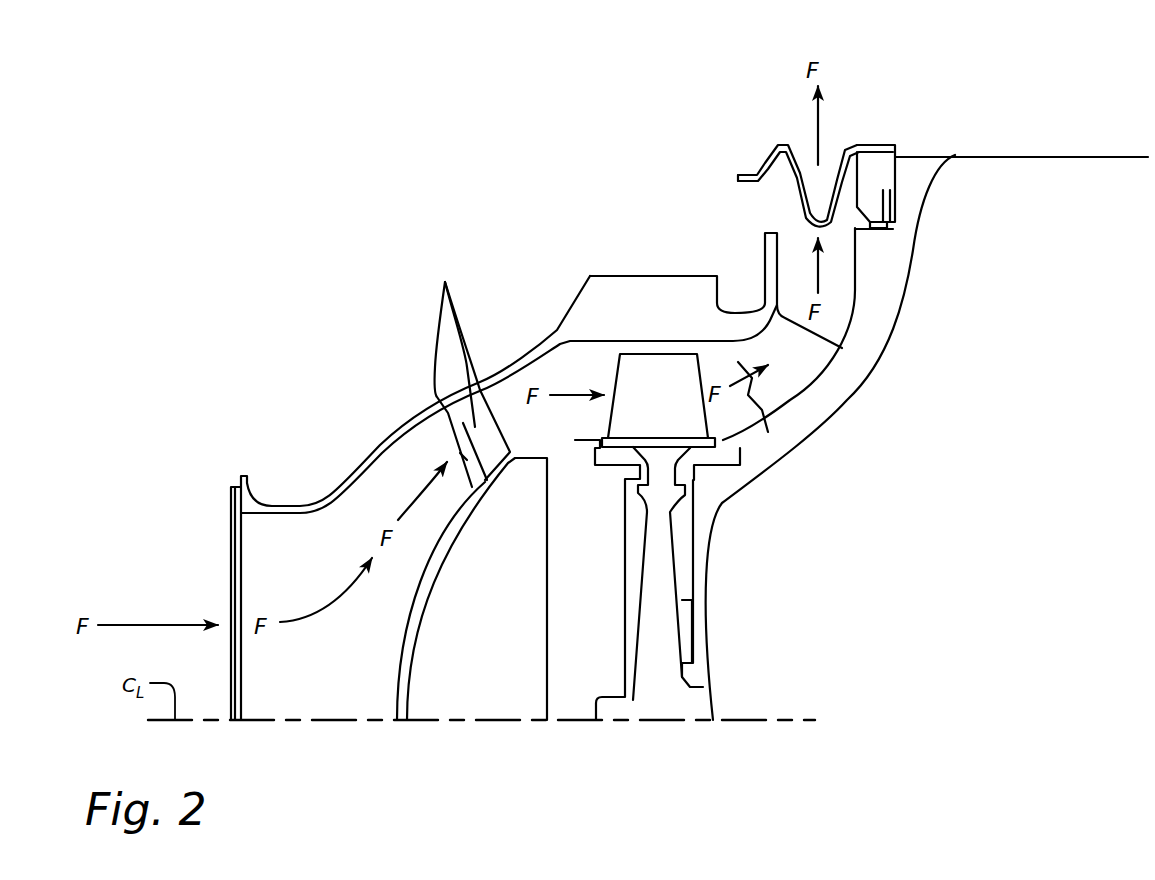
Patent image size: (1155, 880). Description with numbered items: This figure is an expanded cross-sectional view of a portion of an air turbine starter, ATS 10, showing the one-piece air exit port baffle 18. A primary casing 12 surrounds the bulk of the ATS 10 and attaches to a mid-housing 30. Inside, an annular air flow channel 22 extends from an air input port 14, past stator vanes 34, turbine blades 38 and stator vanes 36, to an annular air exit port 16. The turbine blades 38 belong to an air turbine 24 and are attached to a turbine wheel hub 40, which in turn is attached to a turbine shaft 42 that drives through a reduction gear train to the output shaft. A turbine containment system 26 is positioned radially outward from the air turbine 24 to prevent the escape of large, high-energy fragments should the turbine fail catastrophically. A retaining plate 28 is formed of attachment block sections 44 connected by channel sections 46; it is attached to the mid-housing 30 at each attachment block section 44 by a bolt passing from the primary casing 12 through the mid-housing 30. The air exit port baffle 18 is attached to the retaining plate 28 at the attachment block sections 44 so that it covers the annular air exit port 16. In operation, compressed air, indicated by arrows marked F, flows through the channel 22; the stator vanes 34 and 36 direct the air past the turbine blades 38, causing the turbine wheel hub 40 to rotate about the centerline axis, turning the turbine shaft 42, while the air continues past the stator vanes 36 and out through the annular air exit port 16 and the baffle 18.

The ATS 10 is at (326, 184).
The primary casing 12 is at (1088, 157).
The air input port 14 is at (230, 553).
The annular air exit port 16 is at (800, 287).
The air exit port baffle 18 is at (872, 144).
The annular air flow channel 22 is at (418, 467).
The air turbine 24 is at (638, 592).
The turbine containment system 26 is at (620, 275).
The retaining plate 28 is at (903, 148).
The mid-housing 30 is at (955, 155).
The stator vanes 34 is at (472, 370).
The stator vanes 36 is at (723, 440).
The turbine blades 38 is at (655, 408).
The turbine wheel hub 40 is at (655, 640).
The turbine shaft 42 is at (690, 703).
The attachment block sections 44 is at (895, 187).
The channel sections 46 is at (895, 212).